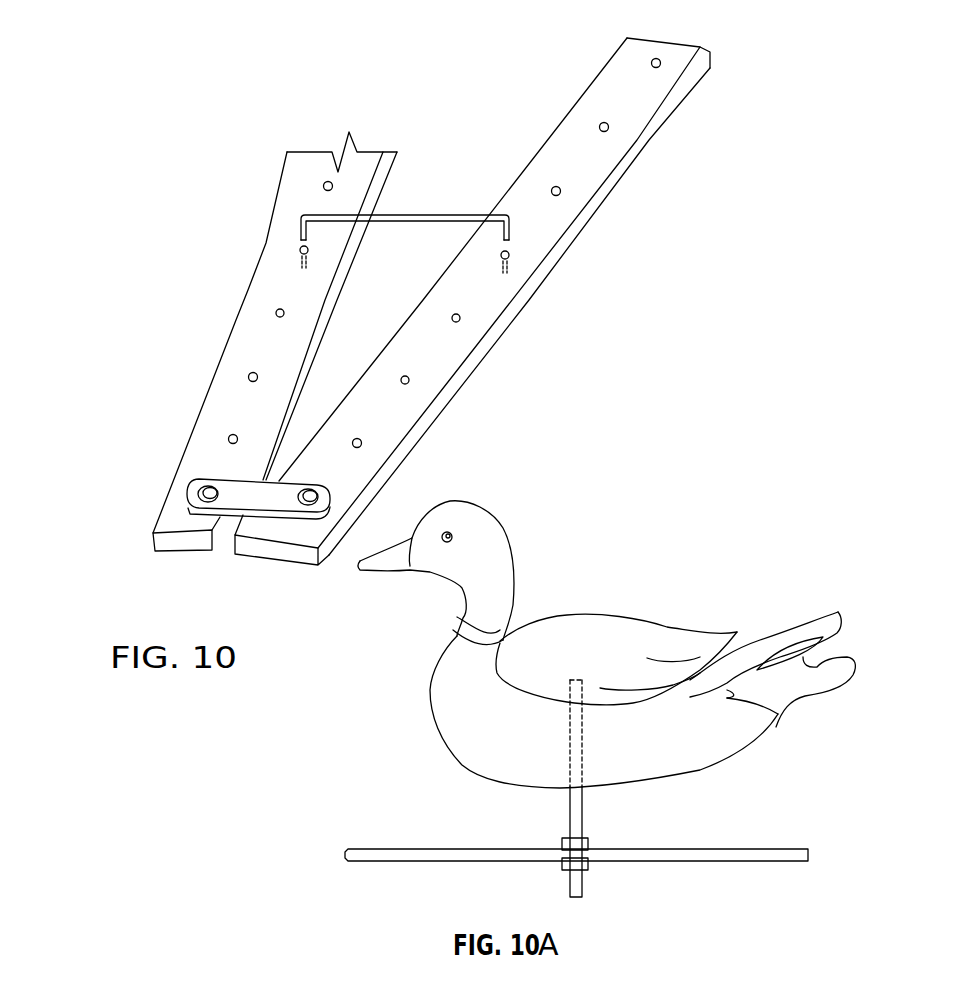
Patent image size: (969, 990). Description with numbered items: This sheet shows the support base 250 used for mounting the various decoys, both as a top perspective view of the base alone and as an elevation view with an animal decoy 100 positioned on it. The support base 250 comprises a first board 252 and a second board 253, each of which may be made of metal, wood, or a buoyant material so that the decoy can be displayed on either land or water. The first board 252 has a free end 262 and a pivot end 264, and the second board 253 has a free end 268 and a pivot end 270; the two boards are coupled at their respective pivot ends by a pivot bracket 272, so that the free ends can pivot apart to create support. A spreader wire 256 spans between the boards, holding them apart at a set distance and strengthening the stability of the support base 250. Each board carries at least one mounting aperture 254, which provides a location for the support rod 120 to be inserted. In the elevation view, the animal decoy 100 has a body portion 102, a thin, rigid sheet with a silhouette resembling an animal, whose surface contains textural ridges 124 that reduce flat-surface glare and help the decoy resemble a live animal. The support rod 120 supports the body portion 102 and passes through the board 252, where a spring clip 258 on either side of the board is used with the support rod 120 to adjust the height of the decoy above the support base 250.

In FIG. 10A, the animal decoy 100 is at (636, 573).
In FIG. 10A, the body portion 102 is at (632, 642).
In FIG. 10A, the textural ridges 124 is at (777, 655).
In FIG. 10A, the support rod 120 is at (580, 800).
In FIG. 10, the support base 250 is at (513, 51).
In FIG. 10, the first board 252 is at (260, 348).
In FIG. 10A, the first board 252 is at (767, 855).
In FIG. 10, the second board 253 is at (548, 232).
In FIG. 10, the mounting aperture 254 is at (278, 311).
In FIG. 10, the spreader wire 256 is at (407, 217).
In FIG. 10A, the spring clip 258 is at (621, 835).
In FIG. 10, the free end 262 is at (310, 173).
In FIG. 10, the pivot end 264 is at (177, 527).
In FIG. 10, the free end 268 is at (681, 58).
In FIG. 10, the pivot end 270 is at (317, 533).
In FIG. 10, the pivot bracket 272 is at (255, 497).